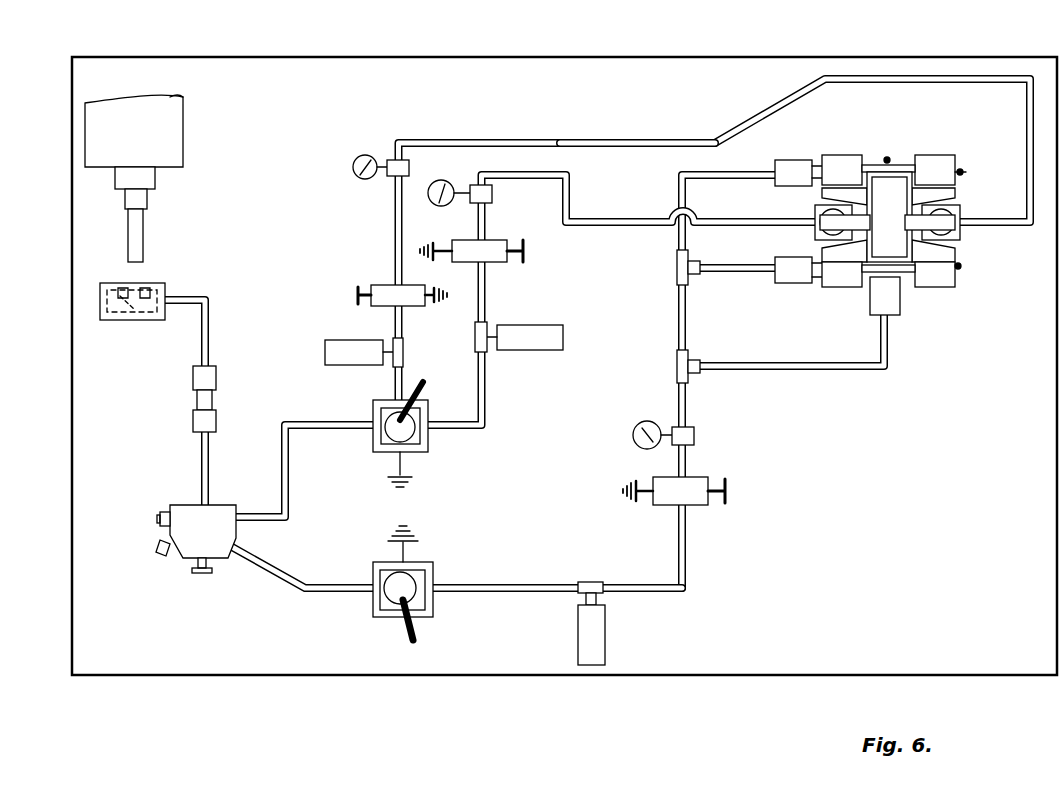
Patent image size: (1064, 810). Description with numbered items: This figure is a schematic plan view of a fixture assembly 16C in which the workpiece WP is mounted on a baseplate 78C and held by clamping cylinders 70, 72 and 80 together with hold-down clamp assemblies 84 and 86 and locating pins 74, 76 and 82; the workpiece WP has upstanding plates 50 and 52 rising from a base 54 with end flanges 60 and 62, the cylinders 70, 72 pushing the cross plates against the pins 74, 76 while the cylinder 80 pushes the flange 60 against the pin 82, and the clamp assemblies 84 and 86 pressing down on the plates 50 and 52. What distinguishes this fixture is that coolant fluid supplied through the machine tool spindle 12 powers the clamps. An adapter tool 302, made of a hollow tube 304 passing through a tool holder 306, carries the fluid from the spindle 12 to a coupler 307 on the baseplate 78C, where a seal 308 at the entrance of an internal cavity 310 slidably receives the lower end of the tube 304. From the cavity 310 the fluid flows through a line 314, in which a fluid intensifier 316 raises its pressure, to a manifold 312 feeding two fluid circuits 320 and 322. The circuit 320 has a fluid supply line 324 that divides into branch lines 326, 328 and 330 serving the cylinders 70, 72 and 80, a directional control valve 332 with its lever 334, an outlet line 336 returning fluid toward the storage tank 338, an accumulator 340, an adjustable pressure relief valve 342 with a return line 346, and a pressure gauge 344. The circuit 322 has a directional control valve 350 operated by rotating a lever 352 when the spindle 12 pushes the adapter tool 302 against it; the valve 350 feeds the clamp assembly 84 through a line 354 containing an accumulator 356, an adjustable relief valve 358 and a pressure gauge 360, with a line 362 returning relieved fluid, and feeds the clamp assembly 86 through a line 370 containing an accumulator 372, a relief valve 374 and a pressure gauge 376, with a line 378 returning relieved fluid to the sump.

The spindle 12 is at (178, 134).
The tool holder 306 is at (155, 182).
The hollow tube 304 is at (143, 246).
The adapter tool 302 is at (172, 218).
The seal 308 is at (168, 283).
The coupler 307 is at (112, 322).
The cavity 310 is at (142, 333).
The fluid intensifier 316 is at (216, 400).
The line 314 is at (208, 462).
The manifold 312 is at (185, 508).
The fluid circuit 320 is at (314, 600).
The fixture assembly 16C is at (358, 690).
The fluid circuit 322 is at (437, 137).
The line 370 is at (578, 142).
The pressure gauge 376 is at (358, 156).
The relief valve 374 is at (372, 286).
The line 378 is at (427, 282).
The line 362 is at (445, 305).
The accumulator 372 is at (330, 340).
The cooling fluid storage tank 338 is at (430, 240).
The lever 352 is at (442, 402).
The directional control valve 350 is at (430, 447).
The line 354 is at (486, 428).
The pressure gauge 360 is at (492, 194).
The adjustable relief valve 358 is at (500, 266).
The accumulator 356 is at (540, 352).
The branch line 326 is at (706, 176).
The branch line 328 is at (706, 278).
The branch line 330 is at (795, 372).
The pressure gauge 344 is at (633, 444).
The line 346 is at (640, 506).
The adjustable pressure relief valve 342 is at (706, 506).
The outlet line 336 is at (392, 550).
The directional control valve 332 is at (436, 566).
The handle 334 is at (398, 656).
The fluid supply line 324 is at (537, 594).
The accumulator 340 is at (607, 640).
The clamping cylinder 70 is at (797, 160).
The clamping cylinder 72 is at (812, 282).
The upstanding plate 52 is at (822, 196).
The base 54 is at (889, 217).
The end flange 60 is at (935, 160).
The end flange 62 is at (945, 288).
The locating pin 74 is at (963, 172).
The locating pin 76 is at (960, 268).
The locating pin 82 is at (888, 157).
The upstanding plate 50 is at (952, 192).
The hold-down clamp assembly 84 is at (818, 226).
The hold-down clamp assembly 86 is at (960, 236).
The clamping cylinder 80 is at (900, 302).
The workpiece WP is at (845, 292).
The baseplate 78C is at (706, 680).